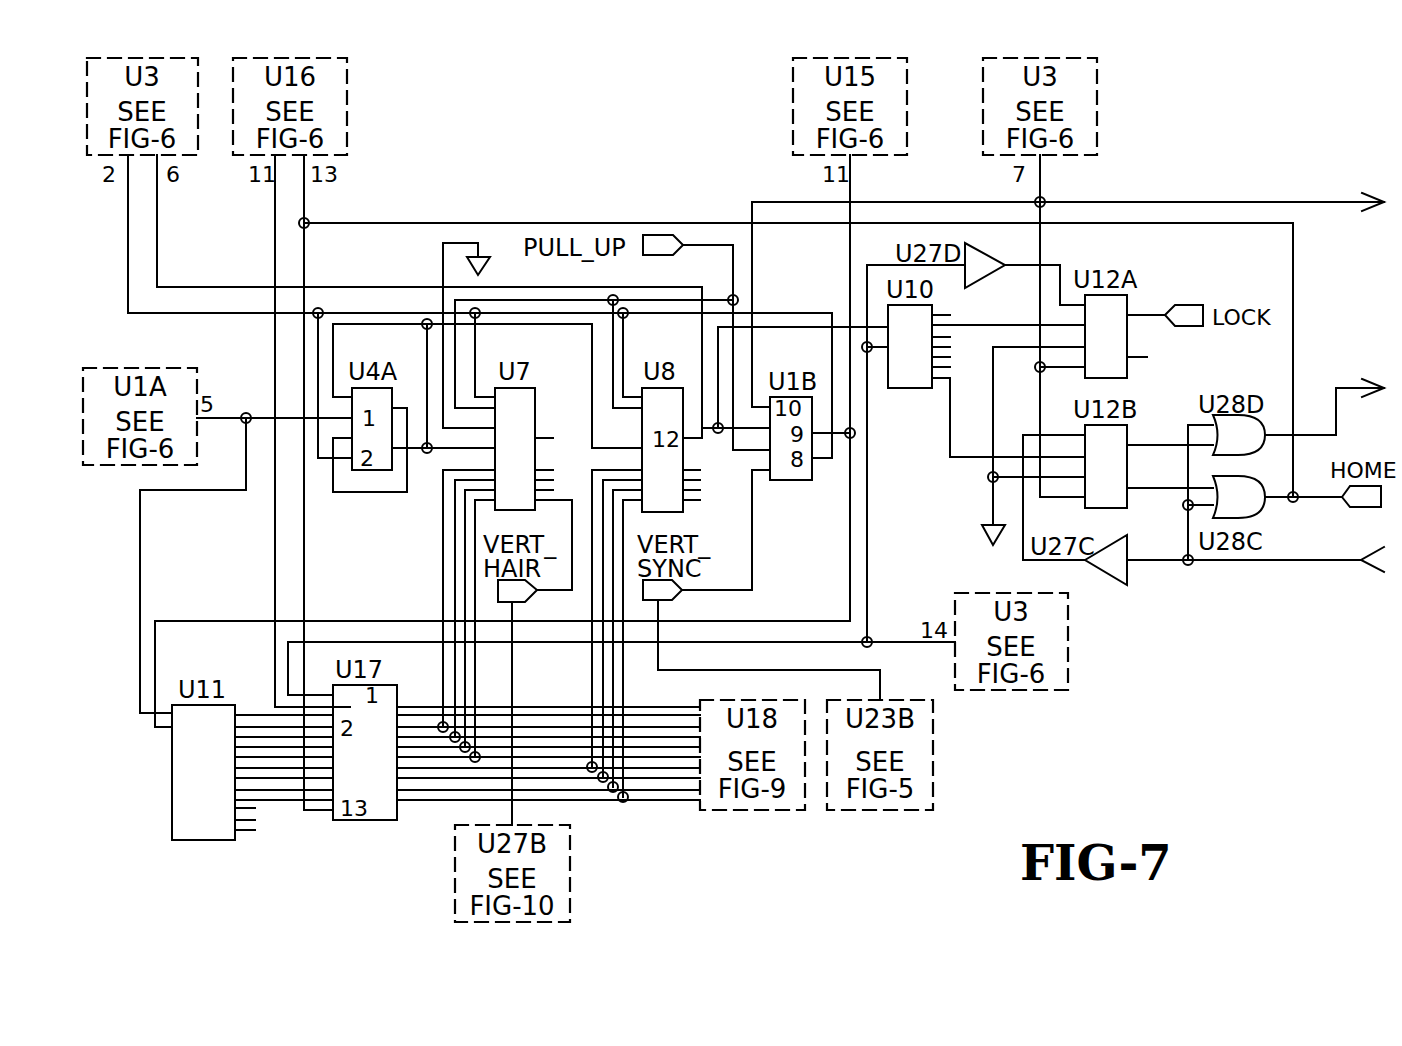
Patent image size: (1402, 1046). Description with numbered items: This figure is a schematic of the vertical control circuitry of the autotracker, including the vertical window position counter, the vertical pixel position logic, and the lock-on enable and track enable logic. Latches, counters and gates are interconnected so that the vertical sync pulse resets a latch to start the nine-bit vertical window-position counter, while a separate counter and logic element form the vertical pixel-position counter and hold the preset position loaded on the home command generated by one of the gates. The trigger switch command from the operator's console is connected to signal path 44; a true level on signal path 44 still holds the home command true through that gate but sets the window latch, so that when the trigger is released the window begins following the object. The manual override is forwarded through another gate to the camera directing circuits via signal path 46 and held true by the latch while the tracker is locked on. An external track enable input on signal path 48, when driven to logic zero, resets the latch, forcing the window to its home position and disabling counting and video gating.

The signal path 44 is at (1350, 563).
The signal path 46 is at (1346, 384).
The signal path 48 is at (1348, 208).